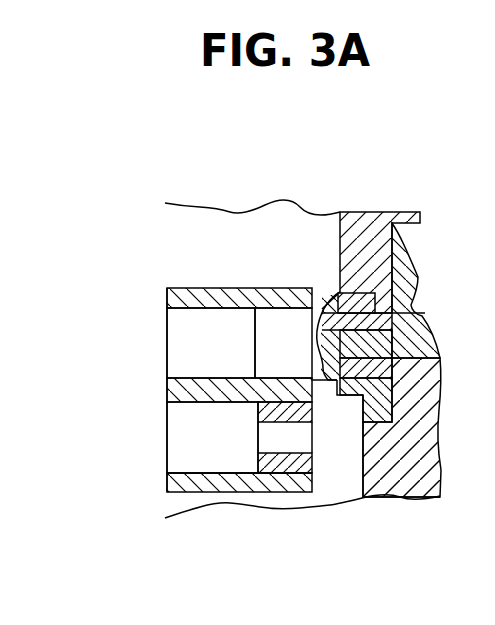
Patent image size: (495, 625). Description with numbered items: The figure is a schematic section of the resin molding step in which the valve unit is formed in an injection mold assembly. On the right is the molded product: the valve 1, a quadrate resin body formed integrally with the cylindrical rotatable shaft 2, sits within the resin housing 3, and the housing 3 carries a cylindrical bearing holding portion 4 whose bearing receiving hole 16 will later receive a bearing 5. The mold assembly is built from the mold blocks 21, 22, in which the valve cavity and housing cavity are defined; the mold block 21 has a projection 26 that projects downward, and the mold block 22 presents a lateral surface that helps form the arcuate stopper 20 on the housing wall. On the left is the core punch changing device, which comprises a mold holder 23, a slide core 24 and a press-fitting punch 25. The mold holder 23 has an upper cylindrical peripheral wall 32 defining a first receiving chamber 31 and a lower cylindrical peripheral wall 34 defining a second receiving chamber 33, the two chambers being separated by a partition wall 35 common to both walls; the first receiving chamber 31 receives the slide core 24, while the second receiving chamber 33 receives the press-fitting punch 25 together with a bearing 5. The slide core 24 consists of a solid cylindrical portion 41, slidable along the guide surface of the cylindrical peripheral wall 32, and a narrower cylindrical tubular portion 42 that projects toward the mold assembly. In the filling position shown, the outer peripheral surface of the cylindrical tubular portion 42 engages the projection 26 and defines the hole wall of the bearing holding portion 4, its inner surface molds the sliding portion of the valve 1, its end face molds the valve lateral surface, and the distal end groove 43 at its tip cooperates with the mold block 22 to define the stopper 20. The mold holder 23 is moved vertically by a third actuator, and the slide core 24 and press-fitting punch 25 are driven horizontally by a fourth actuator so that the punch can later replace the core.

The valve 1 is at (420, 400).
The rotatable shaft 2 is at (398, 340).
The housing 3 is at (393, 545).
The bearing holding portion 4 is at (338, 293).
The bearing 5 is at (275, 473).
The bearing receiving hole 16 is at (333, 400).
The stopper 20 is at (397, 370).
The mold block 21 is at (362, 212).
The mold block 22 is at (416, 487).
The mold holder 23 is at (211, 359).
The slide core 24 is at (248, 265).
The solid cylindrical portion 41 is at (273, 318).
The press-fitting punch 25 is at (198, 473).
The projection 26 is at (412, 282).
The first receiving chamber 31 is at (182, 342).
The cylindrical peripheral wall 32 is at (170, 288).
The second receiving chamber 33 is at (215, 470).
The cylindrical peripheral wall 34 is at (165, 493).
The partition wall 35 is at (168, 390).
The cylindrical tubular portion 42 is at (395, 308).
The distal end groove 43 is at (378, 422).